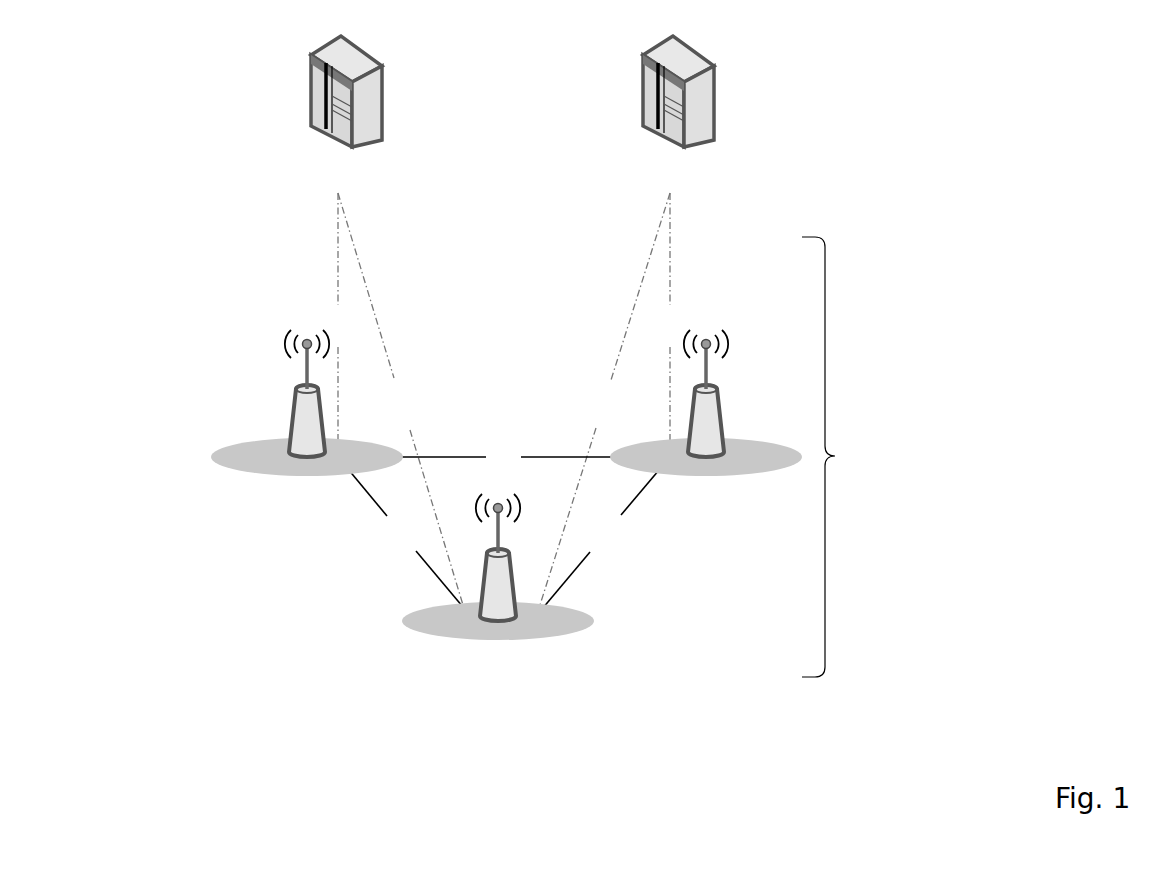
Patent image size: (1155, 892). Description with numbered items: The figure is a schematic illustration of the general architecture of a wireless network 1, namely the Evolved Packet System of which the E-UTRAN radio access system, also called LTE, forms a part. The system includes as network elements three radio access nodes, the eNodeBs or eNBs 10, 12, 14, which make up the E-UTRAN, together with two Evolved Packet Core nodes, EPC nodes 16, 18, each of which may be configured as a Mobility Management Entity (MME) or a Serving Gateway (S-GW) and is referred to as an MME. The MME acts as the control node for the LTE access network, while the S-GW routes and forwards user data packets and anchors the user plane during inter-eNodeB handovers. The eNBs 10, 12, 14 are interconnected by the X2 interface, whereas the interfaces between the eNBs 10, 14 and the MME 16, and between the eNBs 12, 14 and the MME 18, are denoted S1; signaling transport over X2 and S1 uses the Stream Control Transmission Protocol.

The wireless communication network 1 is at (584, 361).
The eNB 10 is at (294, 400).
The eNB 12 is at (716, 398).
The eNB 14 is at (482, 616).
The EPC node 16 is at (386, 96).
The EPC node 18 is at (718, 88).